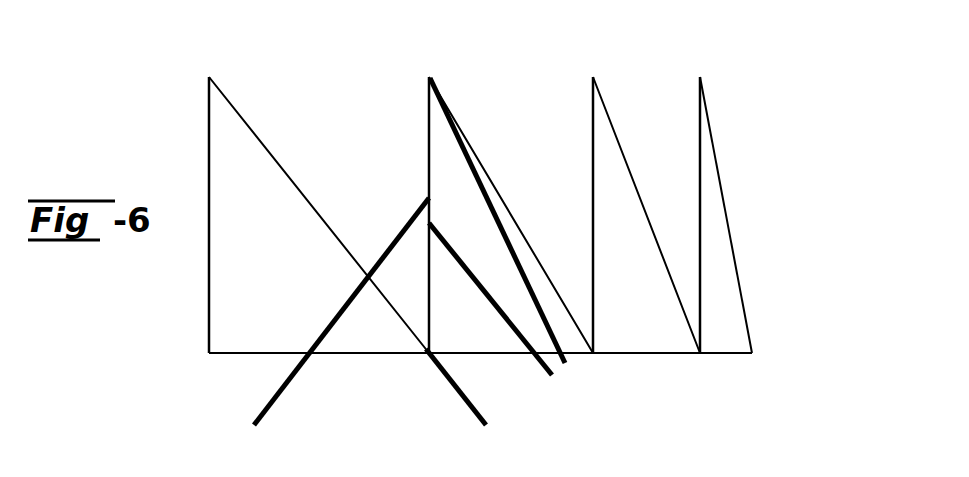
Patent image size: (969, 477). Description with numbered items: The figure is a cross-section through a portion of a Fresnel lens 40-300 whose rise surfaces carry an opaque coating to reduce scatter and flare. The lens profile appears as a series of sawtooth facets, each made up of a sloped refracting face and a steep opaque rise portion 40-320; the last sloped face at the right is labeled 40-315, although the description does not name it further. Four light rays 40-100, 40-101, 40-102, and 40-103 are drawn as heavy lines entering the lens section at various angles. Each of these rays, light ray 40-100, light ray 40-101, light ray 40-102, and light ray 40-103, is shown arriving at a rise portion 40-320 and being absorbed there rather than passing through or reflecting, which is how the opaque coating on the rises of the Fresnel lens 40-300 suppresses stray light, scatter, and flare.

The light ray 40-100 is at (275, 393).
The light ray 40-101 is at (453, 390).
The light ray 40-102 is at (553, 368).
The light ray 40-103 is at (567, 360).
The Fresnel lens 40-300 is at (547, 187).
The last sawtooth ramp 40-315 is at (727, 212).
The opaque rise portion 40-320 is at (426, 122).